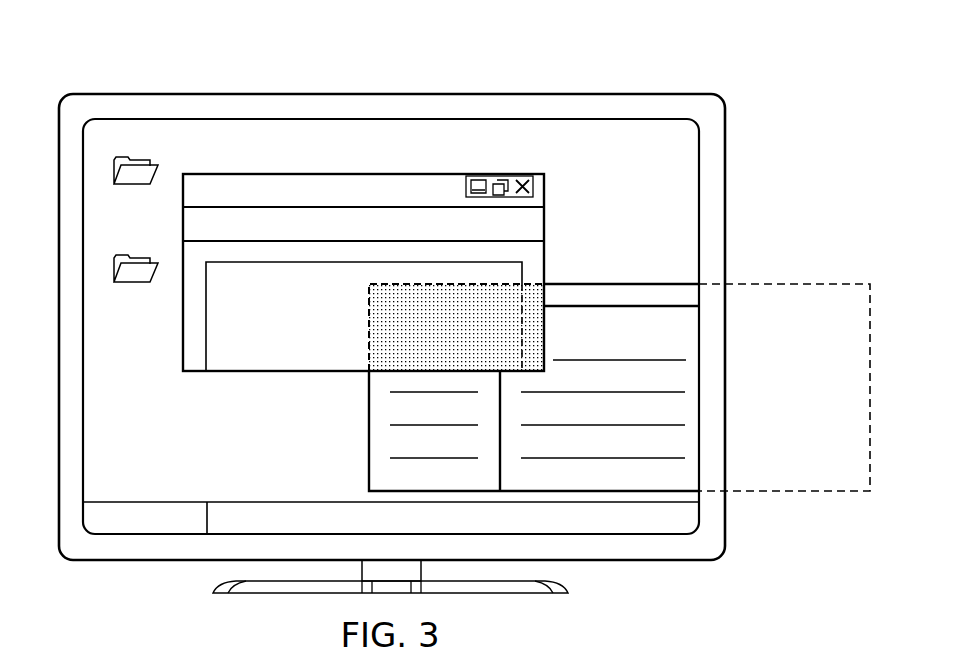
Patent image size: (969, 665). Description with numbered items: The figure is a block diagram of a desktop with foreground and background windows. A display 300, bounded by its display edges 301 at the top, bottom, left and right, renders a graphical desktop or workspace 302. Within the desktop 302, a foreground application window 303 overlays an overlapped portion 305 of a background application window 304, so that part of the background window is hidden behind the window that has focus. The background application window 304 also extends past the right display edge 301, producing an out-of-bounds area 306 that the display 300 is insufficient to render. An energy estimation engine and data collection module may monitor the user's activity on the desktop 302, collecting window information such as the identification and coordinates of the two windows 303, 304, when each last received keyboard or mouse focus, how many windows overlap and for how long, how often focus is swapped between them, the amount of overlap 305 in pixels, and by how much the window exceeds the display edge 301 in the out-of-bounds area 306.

The display 300 is at (210, 62).
The display edge 301 is at (348, 86).
The desktop 302 is at (173, 485).
The foreground application window 303 is at (254, 380).
The background application window 304 is at (613, 276).
The overlapped portion 305 is at (378, 326).
The out-of-bounds area 306 is at (805, 292).